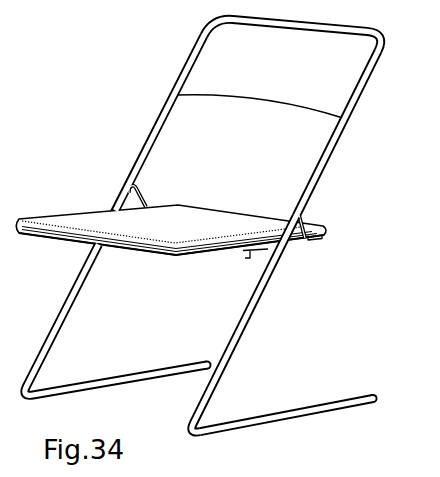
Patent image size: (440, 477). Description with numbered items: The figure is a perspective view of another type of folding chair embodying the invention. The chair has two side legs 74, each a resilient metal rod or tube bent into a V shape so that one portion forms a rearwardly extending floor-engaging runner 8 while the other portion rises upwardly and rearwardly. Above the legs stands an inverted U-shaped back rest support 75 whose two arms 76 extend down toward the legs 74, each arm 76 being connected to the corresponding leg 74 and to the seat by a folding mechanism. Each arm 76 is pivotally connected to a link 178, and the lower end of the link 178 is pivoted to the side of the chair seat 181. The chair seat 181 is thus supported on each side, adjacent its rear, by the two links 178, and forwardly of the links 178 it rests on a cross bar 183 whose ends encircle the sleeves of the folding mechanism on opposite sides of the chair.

The back rest support 75 is at (380, 84).
The arms 76 is at (159, 132).
The link 178 is at (139, 194).
The chair seat 181 is at (320, 240).
The cross bar 183 is at (253, 254).
The side legs 74 is at (66, 316).
The floor-engaging runner 8 is at (298, 418).